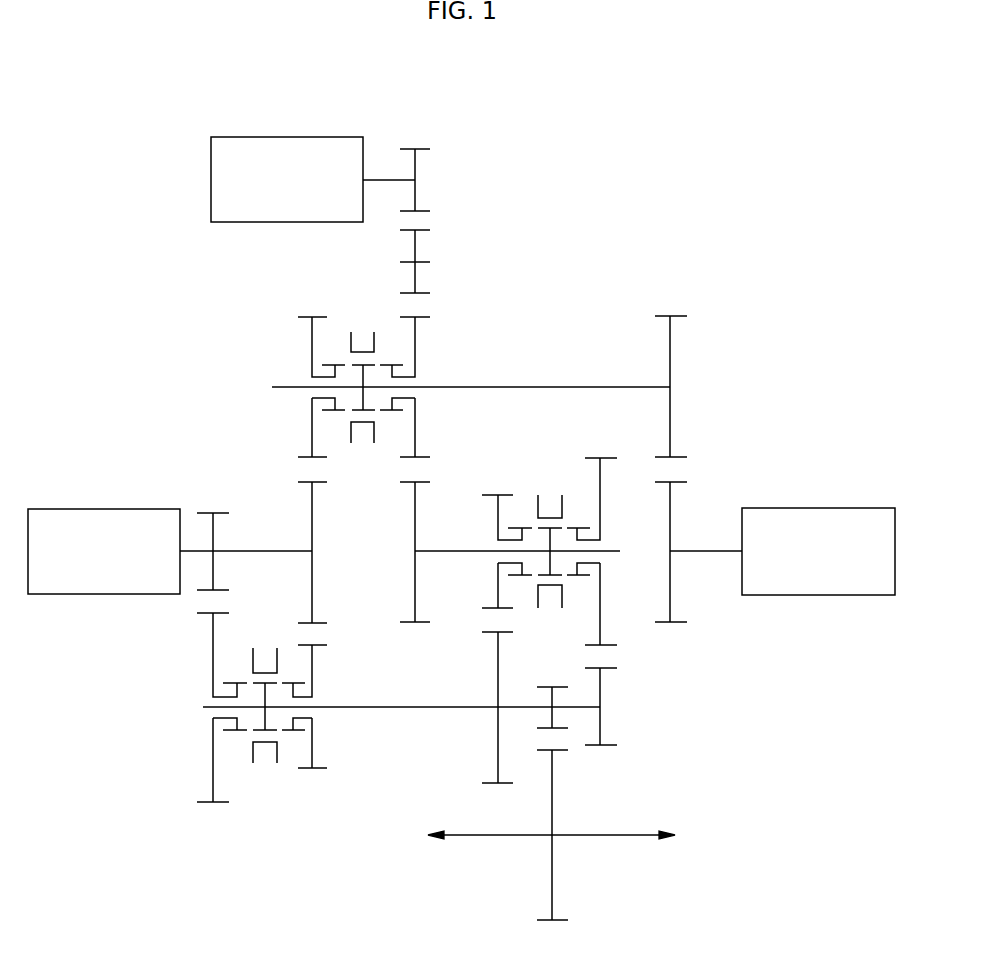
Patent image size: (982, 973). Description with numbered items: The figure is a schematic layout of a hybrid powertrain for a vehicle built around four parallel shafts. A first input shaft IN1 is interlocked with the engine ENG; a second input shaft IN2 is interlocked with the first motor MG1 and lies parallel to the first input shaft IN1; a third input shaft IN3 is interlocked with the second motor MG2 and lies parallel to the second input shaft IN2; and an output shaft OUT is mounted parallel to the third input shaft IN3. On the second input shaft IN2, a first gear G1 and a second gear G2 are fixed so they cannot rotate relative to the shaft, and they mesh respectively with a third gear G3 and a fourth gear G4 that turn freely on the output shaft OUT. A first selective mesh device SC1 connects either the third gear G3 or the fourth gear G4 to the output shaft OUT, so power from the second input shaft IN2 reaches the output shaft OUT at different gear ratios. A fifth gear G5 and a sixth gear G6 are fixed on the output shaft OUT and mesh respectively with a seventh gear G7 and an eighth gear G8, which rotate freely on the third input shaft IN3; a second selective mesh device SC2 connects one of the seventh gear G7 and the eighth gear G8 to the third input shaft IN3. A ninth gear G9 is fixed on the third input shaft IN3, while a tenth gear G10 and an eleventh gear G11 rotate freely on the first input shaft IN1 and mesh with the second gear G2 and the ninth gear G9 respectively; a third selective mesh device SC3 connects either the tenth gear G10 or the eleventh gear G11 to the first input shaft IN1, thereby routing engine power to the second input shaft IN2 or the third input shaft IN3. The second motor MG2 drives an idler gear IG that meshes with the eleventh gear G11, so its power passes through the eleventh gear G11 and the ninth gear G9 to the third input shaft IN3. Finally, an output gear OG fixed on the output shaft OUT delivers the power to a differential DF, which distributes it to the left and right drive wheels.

The first motor MG1 is at (104, 551).
The second motor MG2 is at (313, 179).
The engine ENG is at (782, 551).
The first input shaft IN1 is at (575, 387).
The second input shaft IN2 is at (275, 551).
The third input shaft IN3 is at (437, 551).
The output shaft OUT is at (203, 707).
The idler gear IG is at (430, 230).
The first gear G1 is at (203, 513).
The second gear G2 is at (298, 482).
The third gear G3 is at (207, 802).
The fourth gear G4 is at (320, 768).
The fifth gear G5 is at (490, 783).
The sixth gear G6 is at (607, 745).
The seventh gear G7 is at (505, 495).
The eighth gear G8 is at (610, 457).
The ninth gear G9 is at (405, 622).
The tenth gear G10 is at (298, 317).
The eleventh gear G11 is at (430, 317).
The first selective mesh device SC1 is at (265, 765).
The second selective mesh device SC2 is at (550, 492).
The third selective mesh device SC3 is at (361, 330).
The output gear OG is at (560, 686).
The differential DF is at (559, 840).